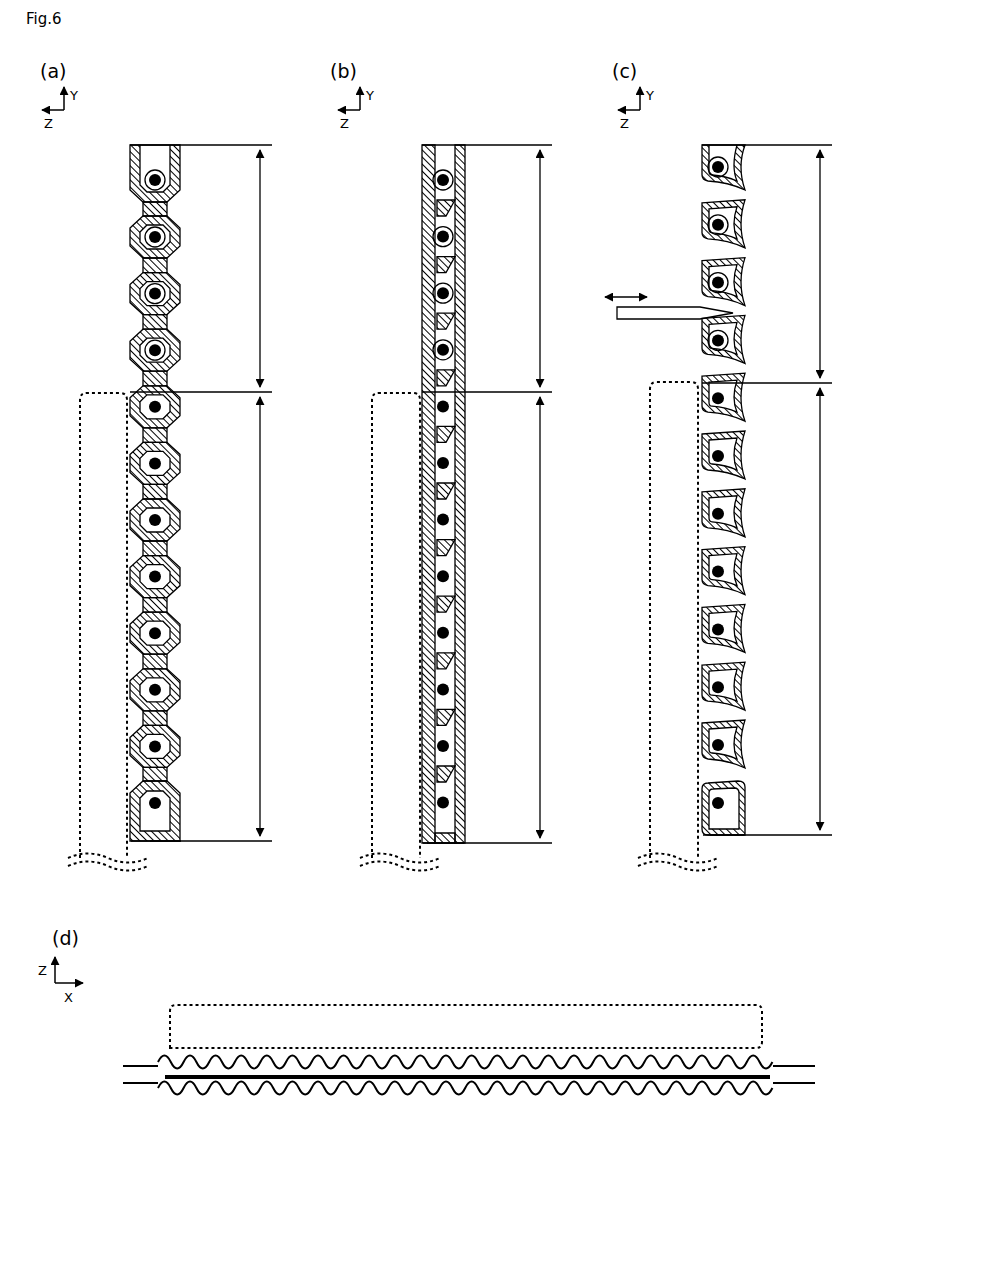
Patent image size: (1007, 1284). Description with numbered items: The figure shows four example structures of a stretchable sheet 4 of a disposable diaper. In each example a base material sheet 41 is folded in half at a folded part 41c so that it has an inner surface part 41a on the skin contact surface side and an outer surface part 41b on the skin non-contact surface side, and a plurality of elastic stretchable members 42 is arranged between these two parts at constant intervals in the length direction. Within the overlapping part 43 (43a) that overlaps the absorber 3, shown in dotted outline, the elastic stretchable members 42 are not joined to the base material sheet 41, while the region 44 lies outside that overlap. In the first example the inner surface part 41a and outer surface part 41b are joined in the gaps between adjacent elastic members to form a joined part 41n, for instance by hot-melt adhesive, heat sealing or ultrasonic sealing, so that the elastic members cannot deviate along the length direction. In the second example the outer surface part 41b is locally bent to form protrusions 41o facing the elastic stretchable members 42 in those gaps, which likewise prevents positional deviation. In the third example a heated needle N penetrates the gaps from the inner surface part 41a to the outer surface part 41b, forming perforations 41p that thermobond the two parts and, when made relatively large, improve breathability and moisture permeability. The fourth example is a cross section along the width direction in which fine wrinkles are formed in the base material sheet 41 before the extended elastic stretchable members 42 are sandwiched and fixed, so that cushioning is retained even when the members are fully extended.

The stretchable sheet 4 is at (436, 621).
The absorber 3 is at (110, 609).
The base material sheet 41 is at (182, 520).
The inner surface part 41a is at (132, 238).
The outer surface part 41b is at (182, 237).
The folded part 41c is at (160, 843).
The joined part 41n is at (150, 322).
The protrusions 41o is at (445, 318).
The perforations 41p is at (742, 313).
The elastic stretchable members 42 is at (161, 577).
The overlapping part 43 is at (512, 615).
The overlapping part 43a is at (512, 615).
The free region 44 is at (491, 268).
The heated needle N is at (668, 313).